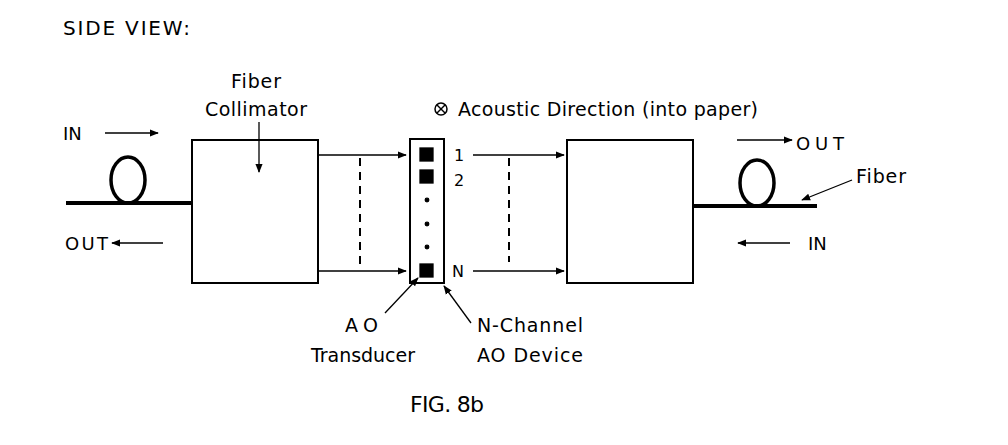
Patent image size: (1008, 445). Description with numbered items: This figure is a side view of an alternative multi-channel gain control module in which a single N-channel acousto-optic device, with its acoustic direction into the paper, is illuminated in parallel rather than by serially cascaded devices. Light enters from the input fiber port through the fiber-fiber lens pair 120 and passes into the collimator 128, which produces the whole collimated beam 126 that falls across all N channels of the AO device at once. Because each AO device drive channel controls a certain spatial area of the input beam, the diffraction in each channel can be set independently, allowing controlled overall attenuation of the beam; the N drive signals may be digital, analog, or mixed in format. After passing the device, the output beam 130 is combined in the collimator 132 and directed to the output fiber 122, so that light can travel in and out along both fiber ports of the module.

The fiber-fiber lens pair 120 is at (90, 200).
The output fiber 122 is at (796, 208).
The collimated beam 126 is at (340, 268).
The collimator 128 is at (294, 233).
The output beam 130 is at (518, 255).
The collimator 132 is at (654, 236).